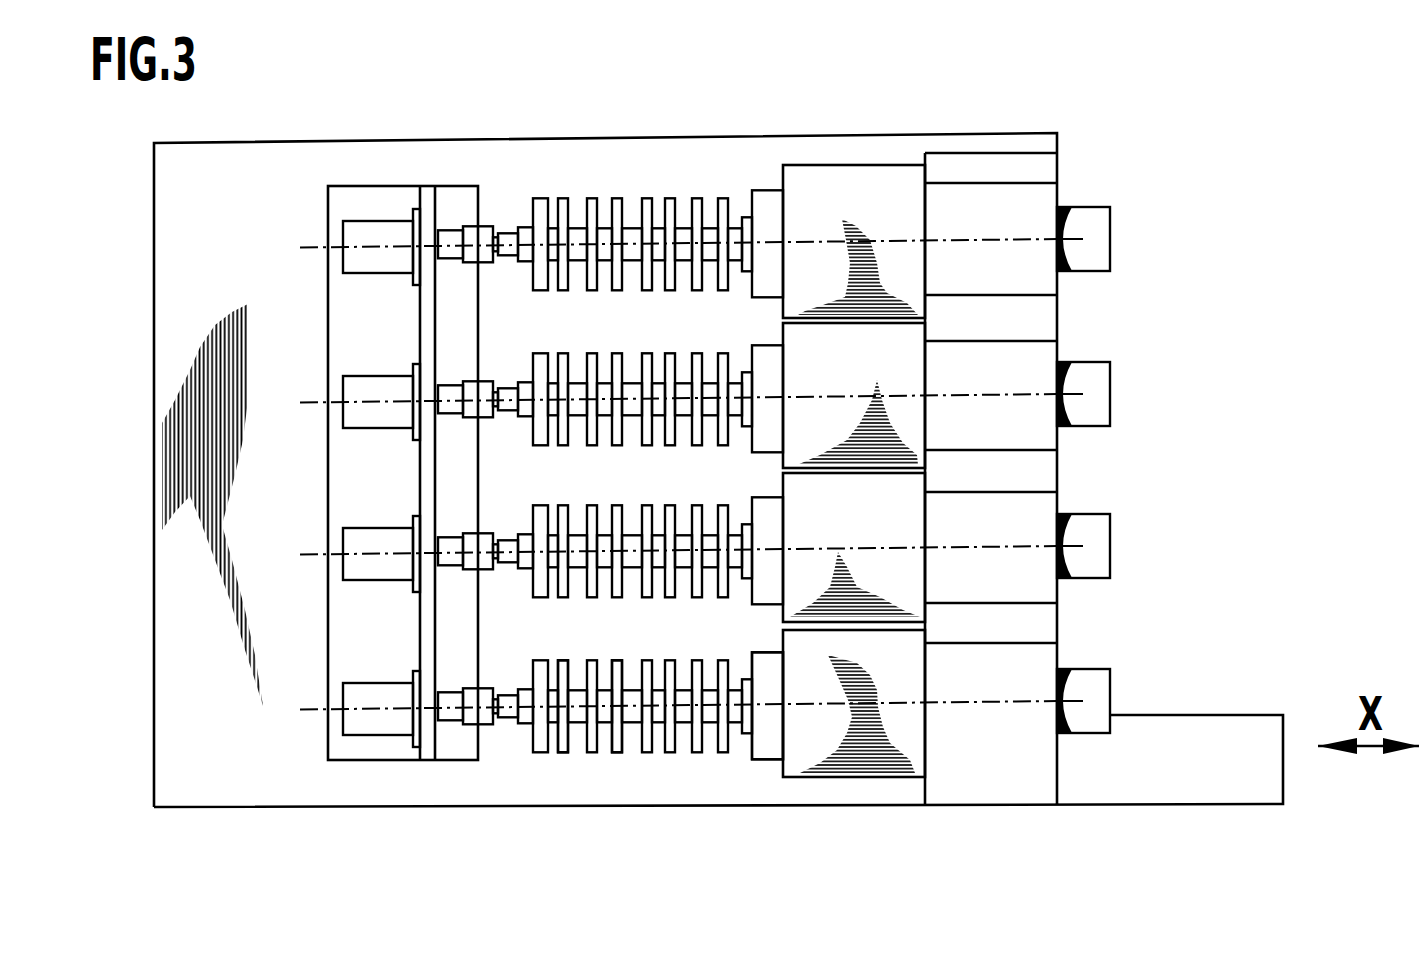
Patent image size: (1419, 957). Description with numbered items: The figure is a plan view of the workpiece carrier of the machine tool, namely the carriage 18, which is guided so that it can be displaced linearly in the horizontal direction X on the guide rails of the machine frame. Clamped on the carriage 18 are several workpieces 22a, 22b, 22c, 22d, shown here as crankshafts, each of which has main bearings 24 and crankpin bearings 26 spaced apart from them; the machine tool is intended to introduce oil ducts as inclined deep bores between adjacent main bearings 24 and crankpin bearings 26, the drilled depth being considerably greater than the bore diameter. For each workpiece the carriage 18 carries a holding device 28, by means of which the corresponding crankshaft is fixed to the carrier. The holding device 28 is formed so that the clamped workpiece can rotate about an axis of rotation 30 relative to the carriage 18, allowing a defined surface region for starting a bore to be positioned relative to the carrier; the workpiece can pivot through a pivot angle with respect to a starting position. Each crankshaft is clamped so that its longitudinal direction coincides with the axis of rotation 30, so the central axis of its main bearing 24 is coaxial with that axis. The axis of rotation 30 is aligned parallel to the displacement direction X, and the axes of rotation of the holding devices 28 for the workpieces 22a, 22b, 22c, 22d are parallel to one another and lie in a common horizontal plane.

The carriage 18 is at (280, 793).
The workpiece 22a is at (518, 722).
The workpiece 22b is at (530, 506).
The workpiece 22c is at (530, 354).
The workpiece 22d is at (530, 200).
The main bearing 24 is at (575, 720).
The crankpin bearing 26 is at (610, 722).
The holding device 28 is at (861, 788).
The axis of rotation 30 is at (765, 713).